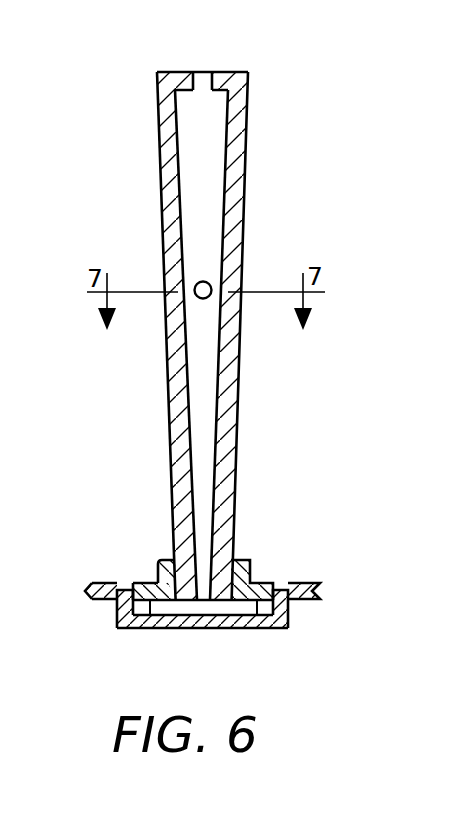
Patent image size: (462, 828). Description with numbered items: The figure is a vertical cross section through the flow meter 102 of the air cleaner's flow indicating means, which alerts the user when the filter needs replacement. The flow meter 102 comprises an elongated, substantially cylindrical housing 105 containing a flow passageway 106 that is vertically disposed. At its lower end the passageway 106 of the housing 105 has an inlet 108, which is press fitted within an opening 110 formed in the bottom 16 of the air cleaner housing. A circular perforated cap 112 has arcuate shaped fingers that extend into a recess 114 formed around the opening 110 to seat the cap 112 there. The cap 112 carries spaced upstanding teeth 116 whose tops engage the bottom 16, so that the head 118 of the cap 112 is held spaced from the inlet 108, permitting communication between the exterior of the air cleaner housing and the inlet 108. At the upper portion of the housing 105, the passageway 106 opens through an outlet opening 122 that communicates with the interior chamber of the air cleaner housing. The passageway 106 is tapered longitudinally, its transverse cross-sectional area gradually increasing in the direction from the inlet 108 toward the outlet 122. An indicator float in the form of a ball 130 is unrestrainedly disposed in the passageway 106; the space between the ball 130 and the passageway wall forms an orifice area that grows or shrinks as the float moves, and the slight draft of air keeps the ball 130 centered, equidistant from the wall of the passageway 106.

The flow meter 102 is at (252, 137).
The housing 105 is at (233, 201).
The flow passageway 106 is at (207, 252).
The outlet opening 122 is at (205, 72).
The ball 130 is at (199, 282).
The opening 110 is at (180, 560).
The inlet 108 is at (233, 553).
The recess 114 is at (281, 586).
The bottom 16 is at (322, 590).
The teeth 116 is at (118, 600).
The head 118 is at (148, 630).
The cap 112 is at (226, 632).